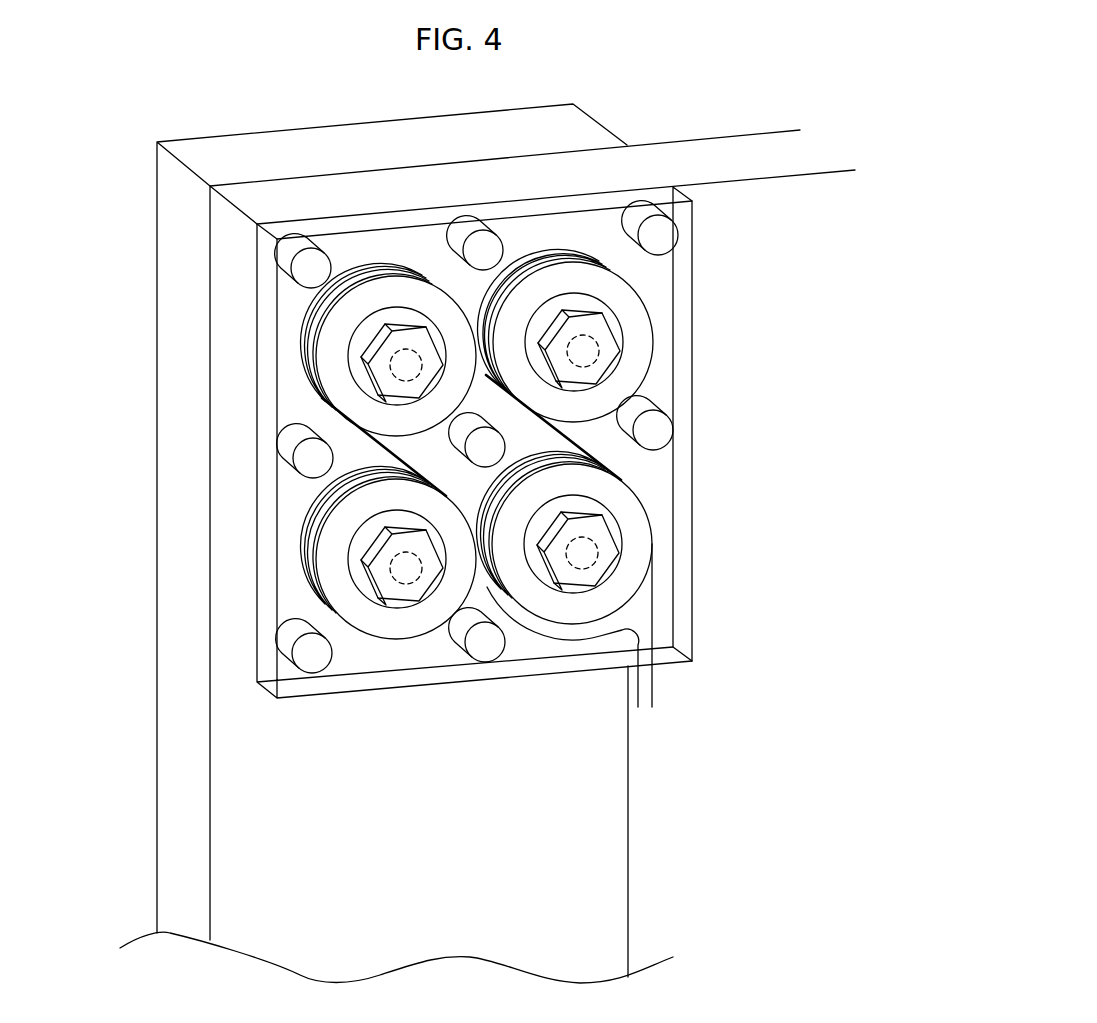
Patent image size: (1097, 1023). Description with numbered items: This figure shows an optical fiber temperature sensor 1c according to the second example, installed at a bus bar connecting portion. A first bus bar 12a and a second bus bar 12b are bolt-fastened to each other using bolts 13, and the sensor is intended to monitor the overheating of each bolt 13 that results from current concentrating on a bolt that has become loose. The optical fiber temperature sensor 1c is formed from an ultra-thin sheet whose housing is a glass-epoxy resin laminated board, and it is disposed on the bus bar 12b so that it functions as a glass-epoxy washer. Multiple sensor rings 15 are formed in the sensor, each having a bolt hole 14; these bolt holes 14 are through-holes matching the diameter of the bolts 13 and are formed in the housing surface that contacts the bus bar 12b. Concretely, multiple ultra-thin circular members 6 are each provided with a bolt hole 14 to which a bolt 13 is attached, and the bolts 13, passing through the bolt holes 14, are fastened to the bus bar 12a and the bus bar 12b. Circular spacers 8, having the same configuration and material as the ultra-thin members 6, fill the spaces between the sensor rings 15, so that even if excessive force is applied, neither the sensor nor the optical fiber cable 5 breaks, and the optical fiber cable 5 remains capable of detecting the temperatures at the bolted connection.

The first bus bar 12a is at (178, 263).
The second bus bar 12b is at (724, 152).
The optical fiber temperature sensor 1c is at (693, 291).
The optical fiber cable 5 is at (653, 597).
The circular spacer 8 is at (303, 279).
The ultra-thin circular member 6 is at (338, 388).
The bolt 13 is at (390, 550).
The bolt hole 14 is at (420, 568).
The sensor ring 15 is at (386, 648).